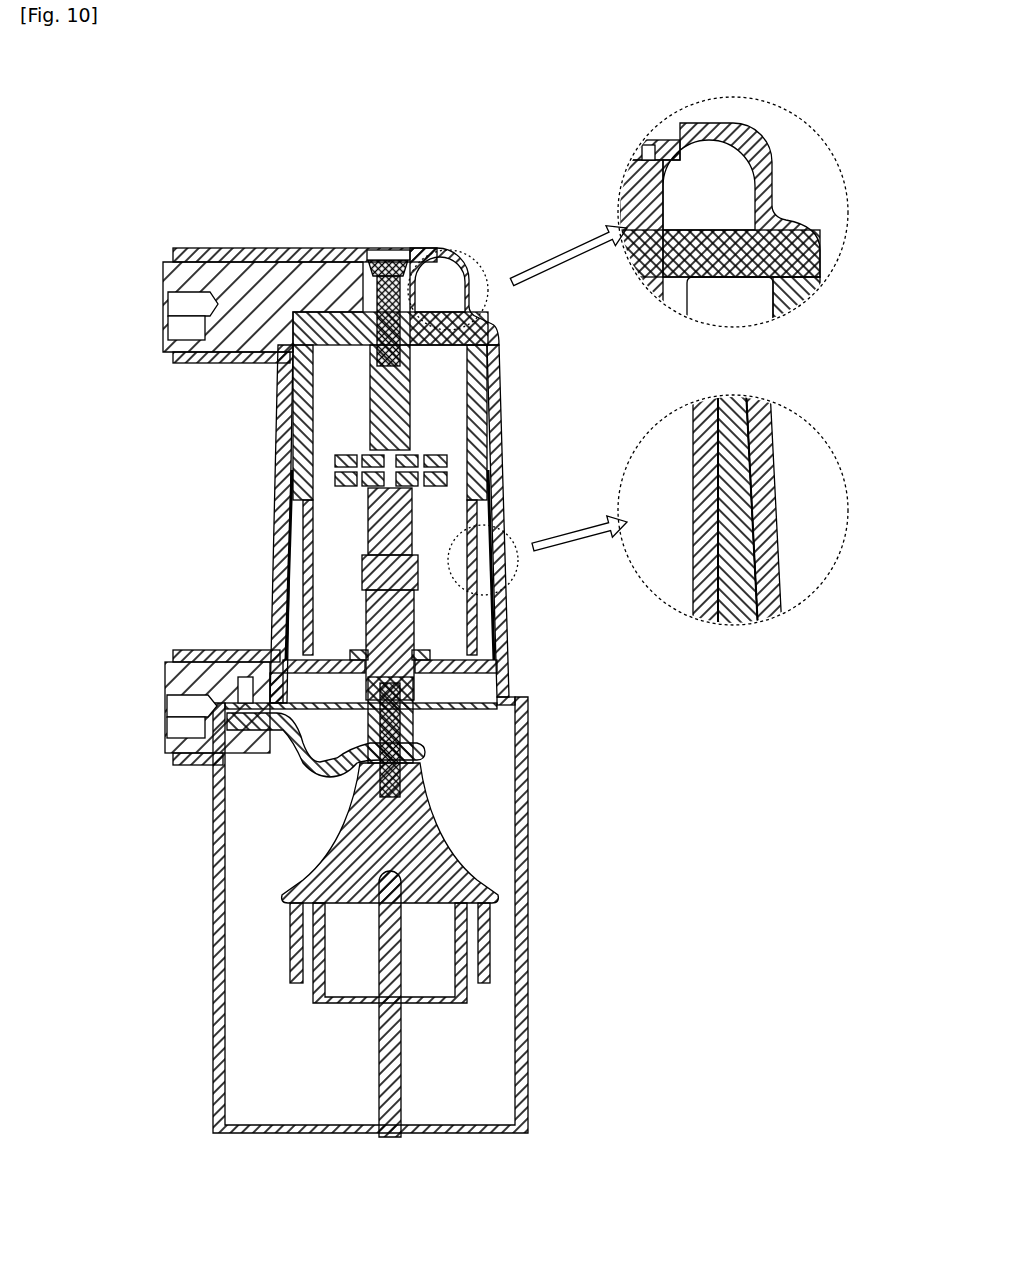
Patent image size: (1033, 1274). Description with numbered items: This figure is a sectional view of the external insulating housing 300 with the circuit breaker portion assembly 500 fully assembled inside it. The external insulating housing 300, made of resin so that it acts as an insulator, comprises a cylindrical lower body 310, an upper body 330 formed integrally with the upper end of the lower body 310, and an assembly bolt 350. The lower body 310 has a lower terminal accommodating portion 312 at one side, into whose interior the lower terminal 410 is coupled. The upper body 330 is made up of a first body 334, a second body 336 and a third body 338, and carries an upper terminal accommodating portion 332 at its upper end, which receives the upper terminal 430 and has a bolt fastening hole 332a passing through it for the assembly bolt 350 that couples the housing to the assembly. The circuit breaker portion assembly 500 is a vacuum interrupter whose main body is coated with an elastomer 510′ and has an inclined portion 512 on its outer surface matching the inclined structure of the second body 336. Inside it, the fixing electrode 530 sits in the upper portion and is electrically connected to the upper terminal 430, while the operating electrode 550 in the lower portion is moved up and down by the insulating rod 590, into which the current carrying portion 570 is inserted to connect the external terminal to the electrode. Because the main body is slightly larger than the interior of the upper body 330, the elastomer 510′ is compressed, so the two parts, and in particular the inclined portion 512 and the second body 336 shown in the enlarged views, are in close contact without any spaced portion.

The external insulating housing 300 is at (366, 870).
The lower body 310 is at (529, 957).
The lower terminal accommodating portion 312 is at (230, 650).
The upper body 330 is at (568, 386).
The upper terminal accommodating portion 332 is at (487, 278).
The bolt fastening hole 332a is at (392, 256).
The first body 334 is at (500, 667).
The second body 336 is at (497, 532).
The third body 338 is at (503, 400).
The assembly bolt 350 is at (378, 268).
The lower terminal 410 is at (185, 680).
The upper terminal 430 is at (200, 271).
The circuit breaker portion assembly 500 is at (364, 907).
The elastomer 510′ is at (300, 325).
The inclined portion 512 is at (280, 568).
The fixing electrode 530 is at (385, 421).
The operating electrode 550 is at (380, 532).
The current carrying portion 570 is at (300, 755).
The insulating rod 590 is at (330, 868).